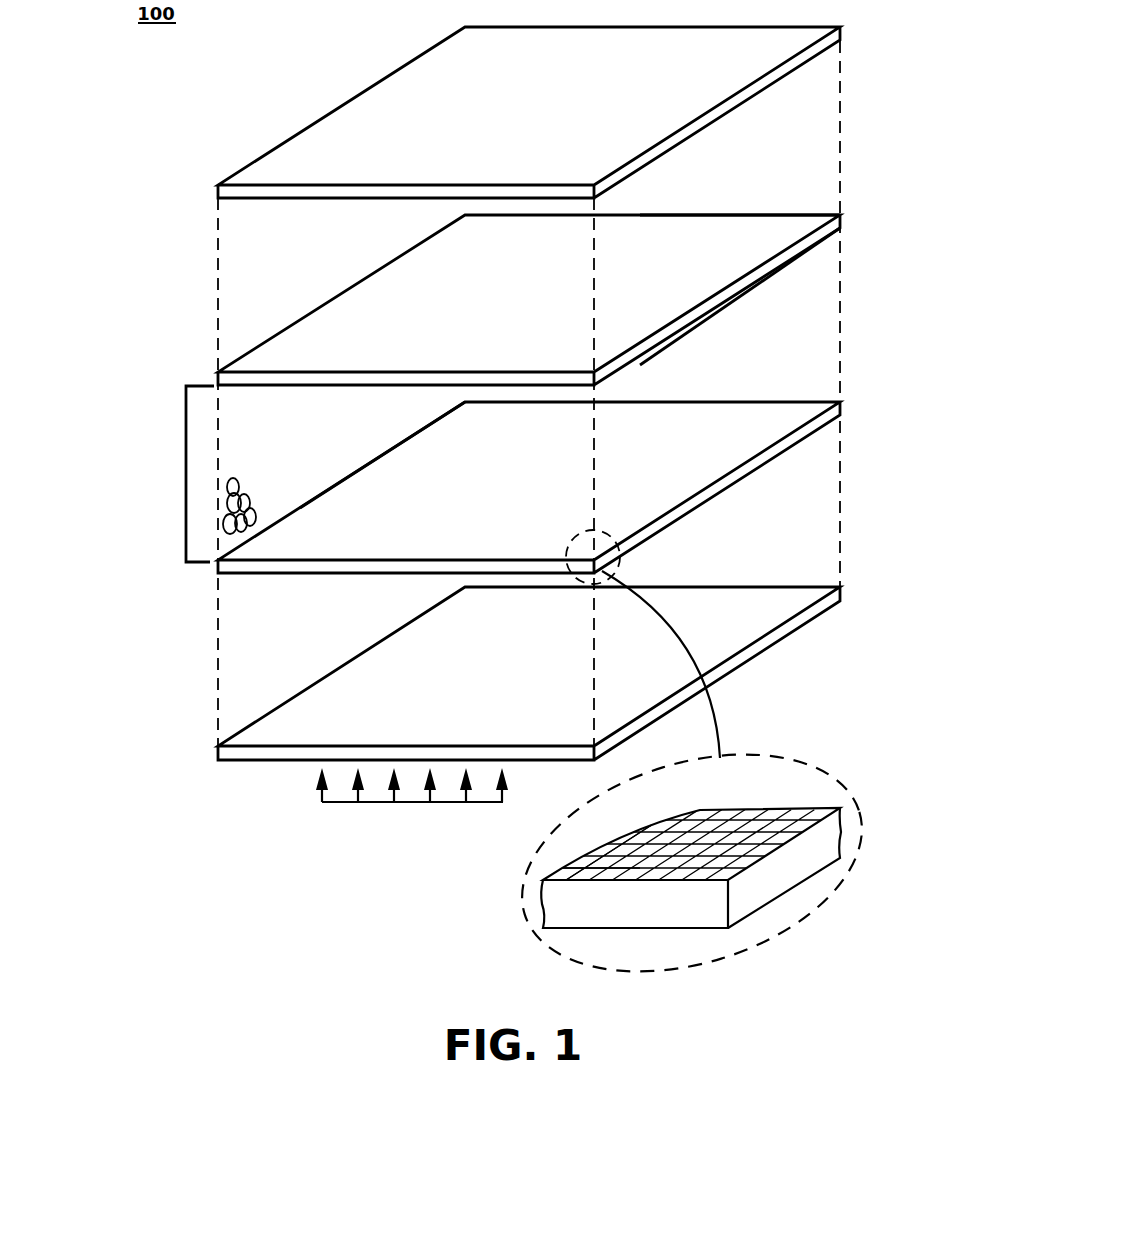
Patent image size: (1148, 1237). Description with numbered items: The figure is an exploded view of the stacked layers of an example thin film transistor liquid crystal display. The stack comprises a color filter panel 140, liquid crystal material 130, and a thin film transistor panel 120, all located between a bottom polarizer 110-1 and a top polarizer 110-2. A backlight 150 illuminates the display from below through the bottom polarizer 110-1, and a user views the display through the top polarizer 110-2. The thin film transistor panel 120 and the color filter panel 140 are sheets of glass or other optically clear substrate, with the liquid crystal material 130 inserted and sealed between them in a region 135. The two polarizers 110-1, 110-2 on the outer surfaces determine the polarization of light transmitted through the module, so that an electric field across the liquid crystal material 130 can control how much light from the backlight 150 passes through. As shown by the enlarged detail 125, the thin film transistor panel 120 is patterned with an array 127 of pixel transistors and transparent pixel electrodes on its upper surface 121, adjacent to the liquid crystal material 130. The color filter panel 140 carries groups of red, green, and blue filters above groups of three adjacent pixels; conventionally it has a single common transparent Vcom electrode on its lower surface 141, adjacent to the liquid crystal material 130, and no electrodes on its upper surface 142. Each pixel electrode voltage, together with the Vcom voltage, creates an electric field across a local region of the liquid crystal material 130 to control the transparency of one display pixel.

The polarizer 110-1 is at (357, 656).
The polarizer 110-2 is at (330, 112).
The thin film transistor (TFT) panel 120 is at (778, 402).
The upper surface 121 is at (388, 498).
The detail 125 is at (716, 718).
The array 127 is at (612, 856).
The liquid crystal material 130 is at (232, 480).
The region 135 is at (186, 402).
The color filter panel 140 is at (360, 283).
The lower surface 141 is at (764, 284).
The upper surface 142 is at (764, 238).
The backlight 150 is at (343, 803).